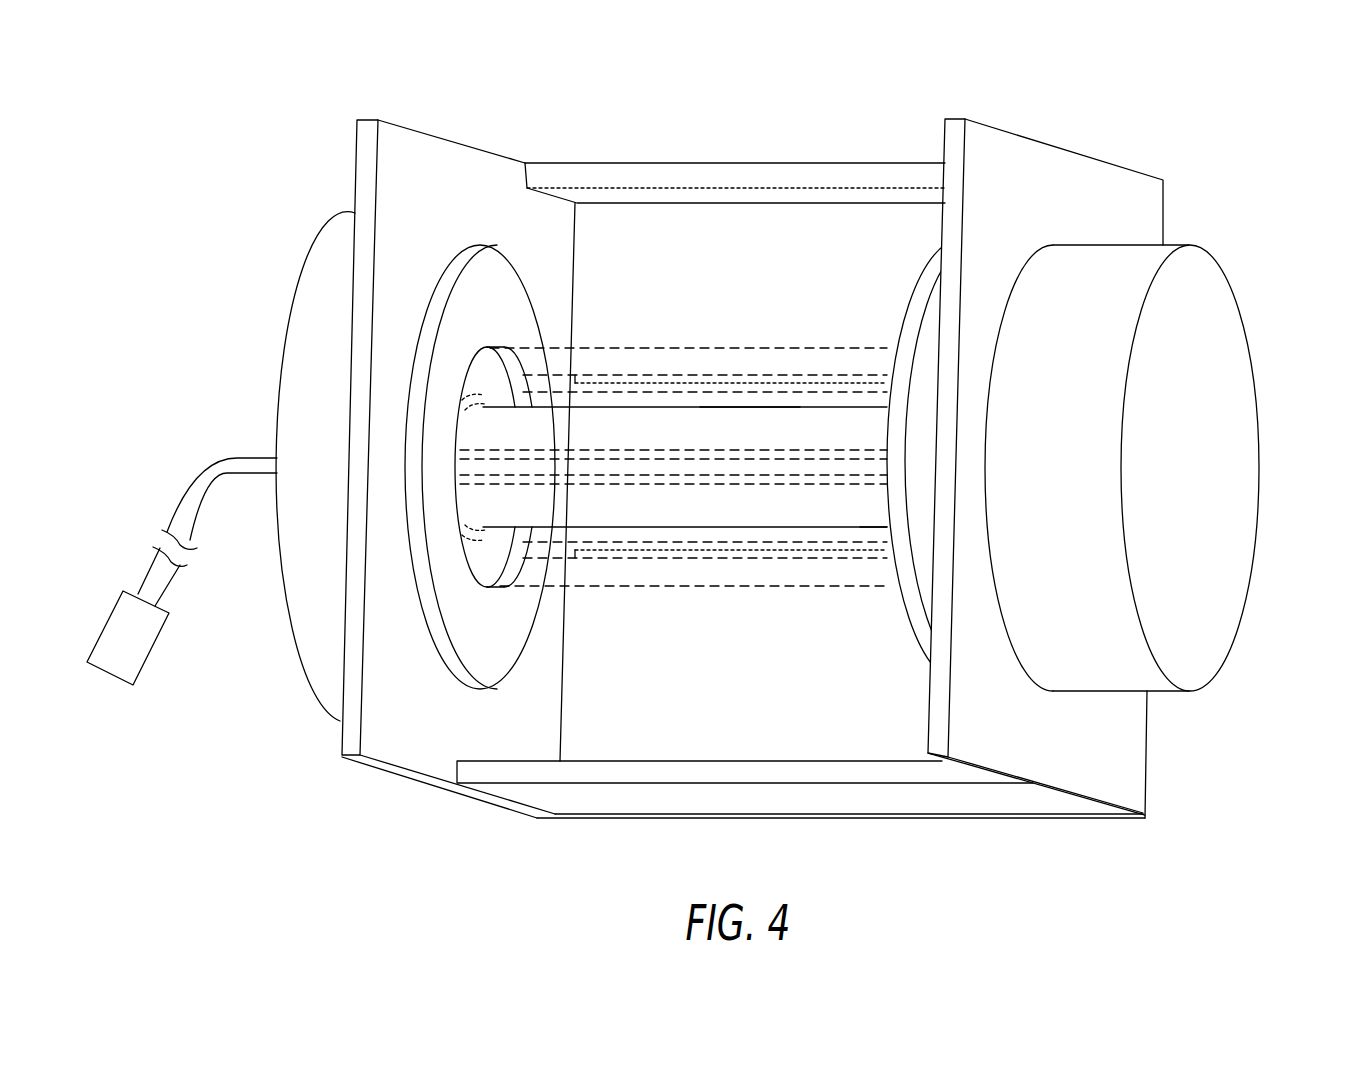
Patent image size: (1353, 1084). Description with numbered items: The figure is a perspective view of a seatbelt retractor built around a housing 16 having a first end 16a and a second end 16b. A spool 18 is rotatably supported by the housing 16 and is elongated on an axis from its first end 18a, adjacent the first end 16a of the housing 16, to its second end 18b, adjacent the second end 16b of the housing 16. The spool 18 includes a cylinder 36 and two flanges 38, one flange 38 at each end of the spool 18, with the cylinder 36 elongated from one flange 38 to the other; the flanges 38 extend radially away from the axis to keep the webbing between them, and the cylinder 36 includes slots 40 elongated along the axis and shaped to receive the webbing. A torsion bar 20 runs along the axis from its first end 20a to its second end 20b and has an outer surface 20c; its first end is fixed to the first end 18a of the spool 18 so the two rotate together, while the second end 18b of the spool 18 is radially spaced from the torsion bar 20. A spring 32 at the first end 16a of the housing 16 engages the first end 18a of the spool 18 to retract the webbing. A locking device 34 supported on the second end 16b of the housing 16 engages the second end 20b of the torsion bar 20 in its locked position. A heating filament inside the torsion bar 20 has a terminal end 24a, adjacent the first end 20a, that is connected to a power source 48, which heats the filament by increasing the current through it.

The housing 16 is at (663, 163).
The first end of the housing 16a is at (963, 200).
The second end of the housing 16b is at (357, 157).
The spool 18 is at (590, 330).
The first end of the spool 18a is at (890, 320).
The second end of the spool 18b is at (525, 258).
The torsion bar 20 is at (737, 527).
The first end of the torsion bar 20a is at (883, 502).
The second end of the torsion bar 20b is at (478, 512).
The outer surface of the torsion bar 20c is at (795, 505).
The terminal end of the heating filament 24a is at (268, 447).
The spring 32 is at (1218, 350).
The locking device 34 is at (277, 335).
The cylinder 36 is at (718, 348).
The flanges 38 is at (478, 285).
The slots 40 is at (637, 380).
The power source 48 is at (150, 658).